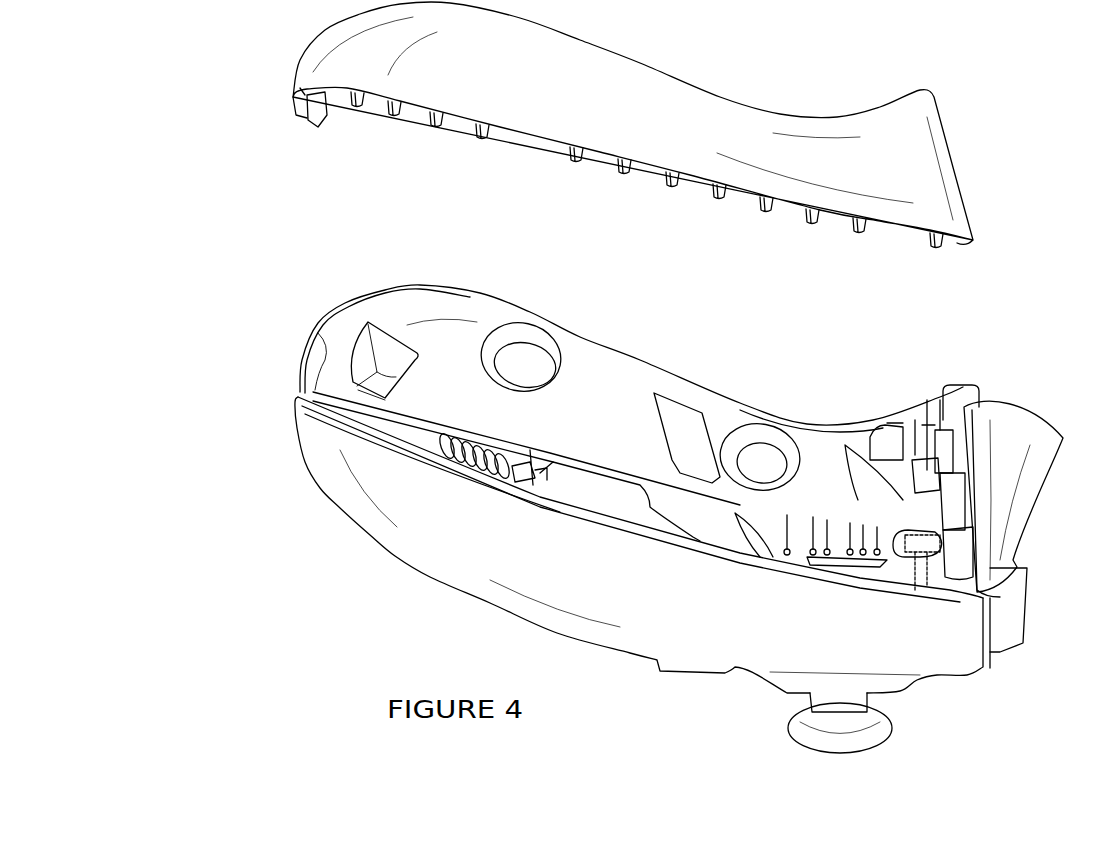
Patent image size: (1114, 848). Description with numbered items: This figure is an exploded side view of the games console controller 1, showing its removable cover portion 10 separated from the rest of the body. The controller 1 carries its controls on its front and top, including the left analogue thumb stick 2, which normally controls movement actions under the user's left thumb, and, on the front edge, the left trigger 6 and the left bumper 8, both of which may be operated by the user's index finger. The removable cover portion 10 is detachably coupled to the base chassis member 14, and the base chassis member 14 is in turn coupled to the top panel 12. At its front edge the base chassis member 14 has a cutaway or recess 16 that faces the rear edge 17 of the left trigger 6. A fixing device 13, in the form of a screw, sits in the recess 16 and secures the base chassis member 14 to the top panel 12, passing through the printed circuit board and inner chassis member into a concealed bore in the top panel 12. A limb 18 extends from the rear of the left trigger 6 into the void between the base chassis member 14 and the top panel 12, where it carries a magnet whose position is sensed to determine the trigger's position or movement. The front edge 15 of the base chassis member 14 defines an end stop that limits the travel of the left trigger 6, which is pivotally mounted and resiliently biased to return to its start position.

The controller 1 is at (272, 312).
The left analogue thumb stick 2 is at (807, 735).
The left trigger 6 is at (1030, 477).
The left bumper 8 is at (1027, 610).
The removable cover portion 10 is at (643, 90).
The top panel 12 is at (478, 545).
The fixing device 13 is at (917, 540).
The base chassis member 14 is at (600, 367).
The front edge 15 is at (920, 458).
The recess 16 is at (883, 453).
The rear edge 17 is at (947, 395).
The limb 18 is at (920, 420).